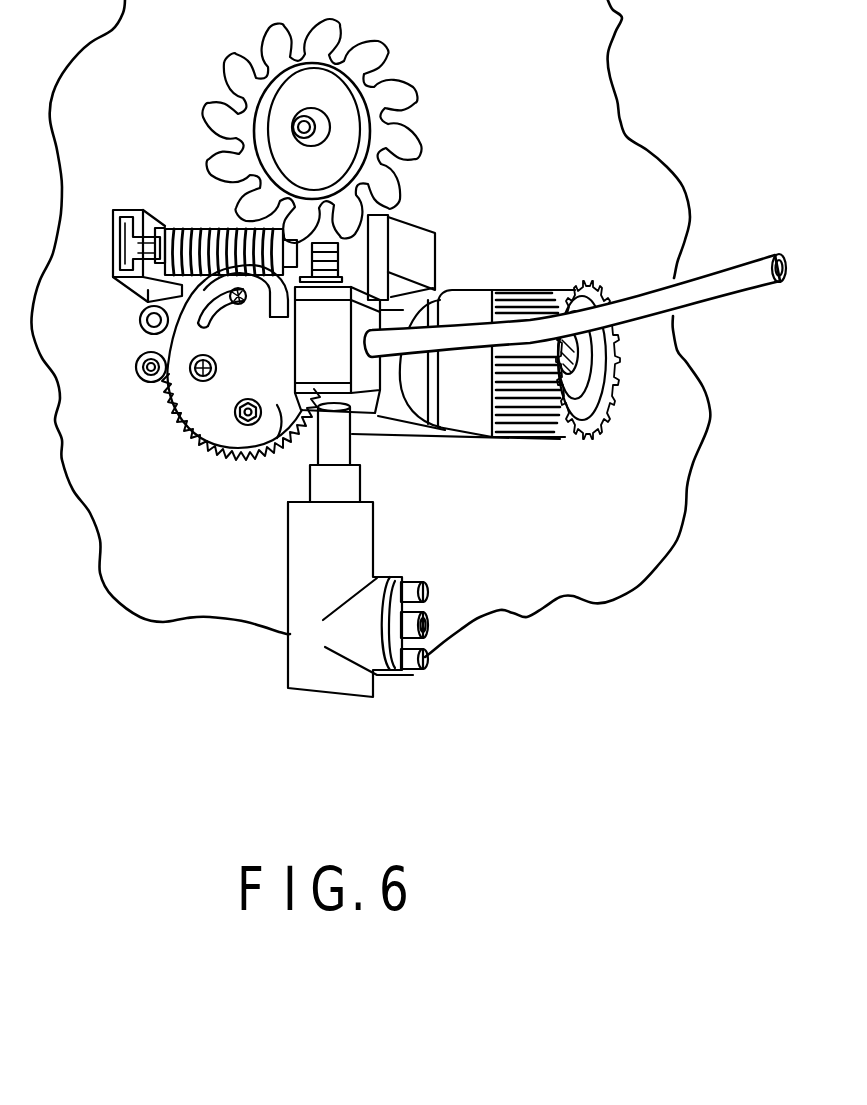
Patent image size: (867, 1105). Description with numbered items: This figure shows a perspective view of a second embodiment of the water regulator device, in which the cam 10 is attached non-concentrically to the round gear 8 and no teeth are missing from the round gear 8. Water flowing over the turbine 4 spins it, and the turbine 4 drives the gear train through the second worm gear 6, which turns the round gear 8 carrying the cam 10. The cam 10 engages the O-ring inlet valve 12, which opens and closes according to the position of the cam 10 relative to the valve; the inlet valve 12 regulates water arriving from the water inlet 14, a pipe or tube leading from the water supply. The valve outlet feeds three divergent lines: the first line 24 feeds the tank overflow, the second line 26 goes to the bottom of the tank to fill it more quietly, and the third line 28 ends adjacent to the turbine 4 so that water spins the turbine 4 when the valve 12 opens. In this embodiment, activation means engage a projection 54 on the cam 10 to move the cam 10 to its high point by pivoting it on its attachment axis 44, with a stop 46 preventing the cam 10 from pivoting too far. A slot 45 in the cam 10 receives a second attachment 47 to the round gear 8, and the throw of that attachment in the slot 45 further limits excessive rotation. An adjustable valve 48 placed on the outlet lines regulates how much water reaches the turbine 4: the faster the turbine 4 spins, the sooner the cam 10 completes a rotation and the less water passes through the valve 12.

The turbine 4 is at (347, 132).
The second worm gear 6 is at (178, 230).
The round gear 8 is at (222, 460).
The cam 10 is at (264, 466).
The O-ring inlet valve 12 is at (406, 439).
The water inlet 14 is at (585, 395).
The first outlet line 24 is at (618, 310).
The second outlet line 26 is at (340, 452).
The third outlet line 28 is at (377, 257).
The attachment axis 44 is at (193, 362).
The slot 45 is at (197, 312).
The stop 46 is at (148, 380).
The second attachment 47 is at (236, 292).
The adjustable valve 48 is at (364, 611).
The projection 54 is at (240, 423).